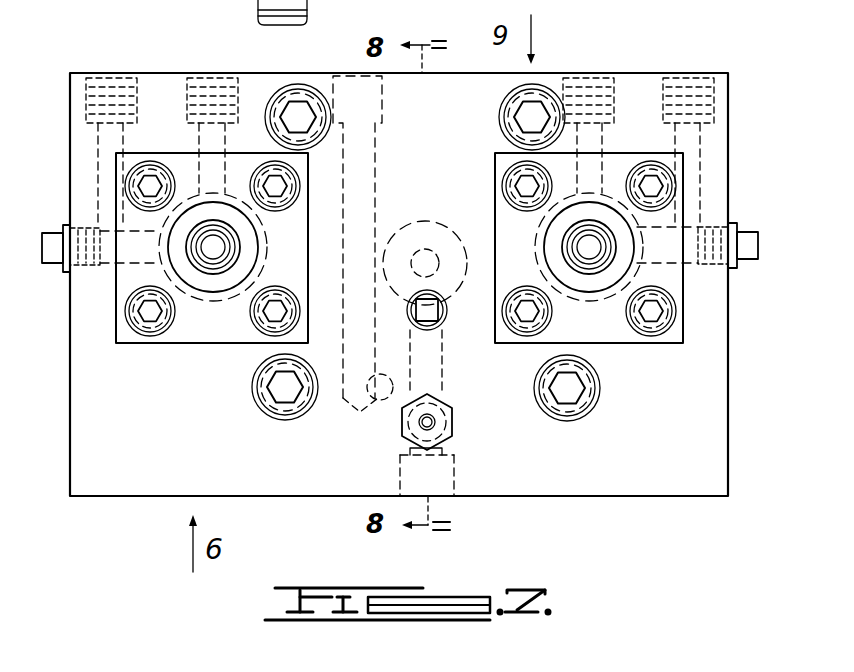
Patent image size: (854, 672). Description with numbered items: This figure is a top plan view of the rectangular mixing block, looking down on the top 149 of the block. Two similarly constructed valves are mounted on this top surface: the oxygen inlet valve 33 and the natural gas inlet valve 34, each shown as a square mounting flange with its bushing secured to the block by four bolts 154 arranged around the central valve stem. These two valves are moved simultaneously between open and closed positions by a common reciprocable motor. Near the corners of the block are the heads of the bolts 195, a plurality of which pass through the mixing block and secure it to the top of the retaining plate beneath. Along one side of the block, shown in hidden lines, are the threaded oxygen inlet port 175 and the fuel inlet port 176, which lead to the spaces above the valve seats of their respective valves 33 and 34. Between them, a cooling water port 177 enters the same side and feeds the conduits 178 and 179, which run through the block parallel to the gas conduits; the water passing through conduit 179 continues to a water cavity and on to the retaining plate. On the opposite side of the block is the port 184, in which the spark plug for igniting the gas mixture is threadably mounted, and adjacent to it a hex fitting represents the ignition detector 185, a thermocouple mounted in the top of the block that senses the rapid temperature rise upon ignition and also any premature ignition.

The top of block 149 is at (156, 425).
The oxygen inlet valve 33 is at (229, 350).
The natural gas inlet valve 34 is at (661, 350).
The bolts 154 is at (143, 323).
The bolts 195 is at (282, 408).
The oxygen inlet port 175 is at (237, 80).
The fuel inlet port 176 is at (600, 82).
The cooling water port 177 is at (380, 101).
The conduit 178 is at (374, 160).
The conduit 179 is at (378, 413).
The port 184 is at (448, 465).
The ignition detector 185 is at (452, 414).